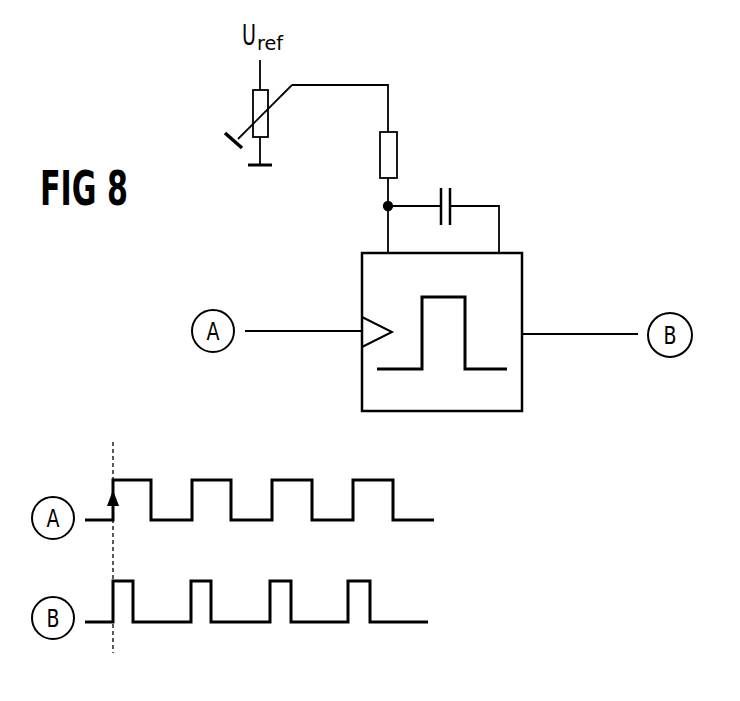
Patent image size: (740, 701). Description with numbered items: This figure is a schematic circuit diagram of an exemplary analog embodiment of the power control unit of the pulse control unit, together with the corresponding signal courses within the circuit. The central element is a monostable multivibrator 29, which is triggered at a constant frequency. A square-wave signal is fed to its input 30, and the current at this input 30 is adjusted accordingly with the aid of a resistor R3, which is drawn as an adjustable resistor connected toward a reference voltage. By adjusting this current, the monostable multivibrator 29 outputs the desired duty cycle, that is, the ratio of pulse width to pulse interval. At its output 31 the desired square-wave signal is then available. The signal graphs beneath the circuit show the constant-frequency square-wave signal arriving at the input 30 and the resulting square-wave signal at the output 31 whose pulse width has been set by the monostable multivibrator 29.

The resistor R3 is at (250, 103).
The monostable multivibrator 29 is at (517, 293).
The input 30 is at (293, 332).
The output 31 is at (583, 337).